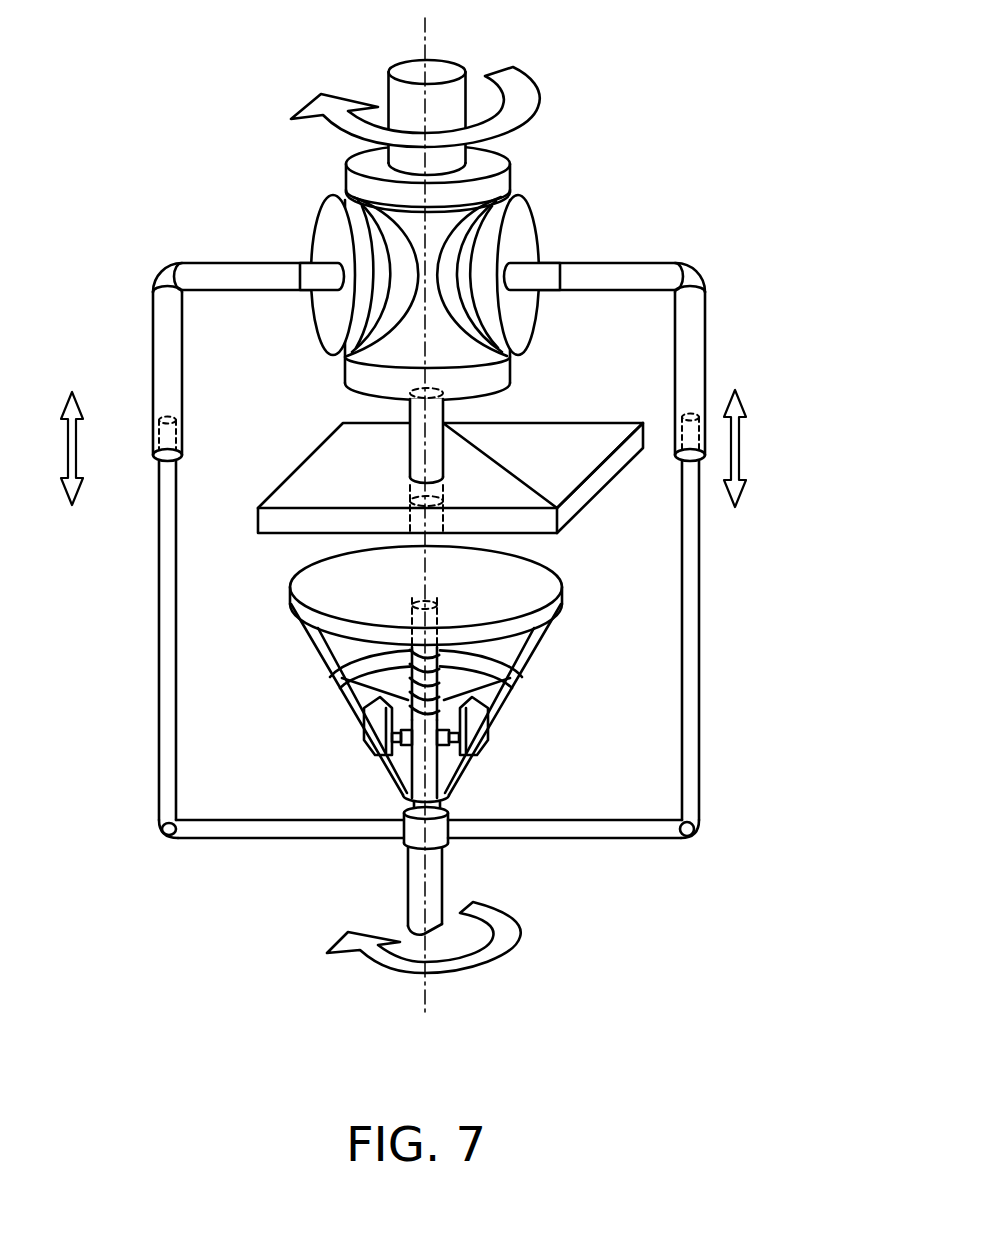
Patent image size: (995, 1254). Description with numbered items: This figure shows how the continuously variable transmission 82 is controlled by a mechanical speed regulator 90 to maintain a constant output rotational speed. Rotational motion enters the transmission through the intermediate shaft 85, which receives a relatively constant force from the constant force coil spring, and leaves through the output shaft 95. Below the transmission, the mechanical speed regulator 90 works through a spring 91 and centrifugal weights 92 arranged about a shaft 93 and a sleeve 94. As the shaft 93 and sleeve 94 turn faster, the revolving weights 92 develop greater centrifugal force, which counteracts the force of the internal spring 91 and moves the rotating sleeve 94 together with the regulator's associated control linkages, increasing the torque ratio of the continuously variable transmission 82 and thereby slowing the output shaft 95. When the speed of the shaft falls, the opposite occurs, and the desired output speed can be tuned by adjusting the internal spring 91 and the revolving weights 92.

The continuously variable transmission 82 is at (777, 190).
The intermediate shaft 85 is at (398, 64).
The mechanical speed regulator 90 is at (559, 697).
The spring 91 is at (446, 680).
The centrifugal weights 92 is at (362, 729).
The shaft 93 is at (410, 682).
The sleeve 94 is at (438, 764).
The output shaft 95 is at (438, 868).